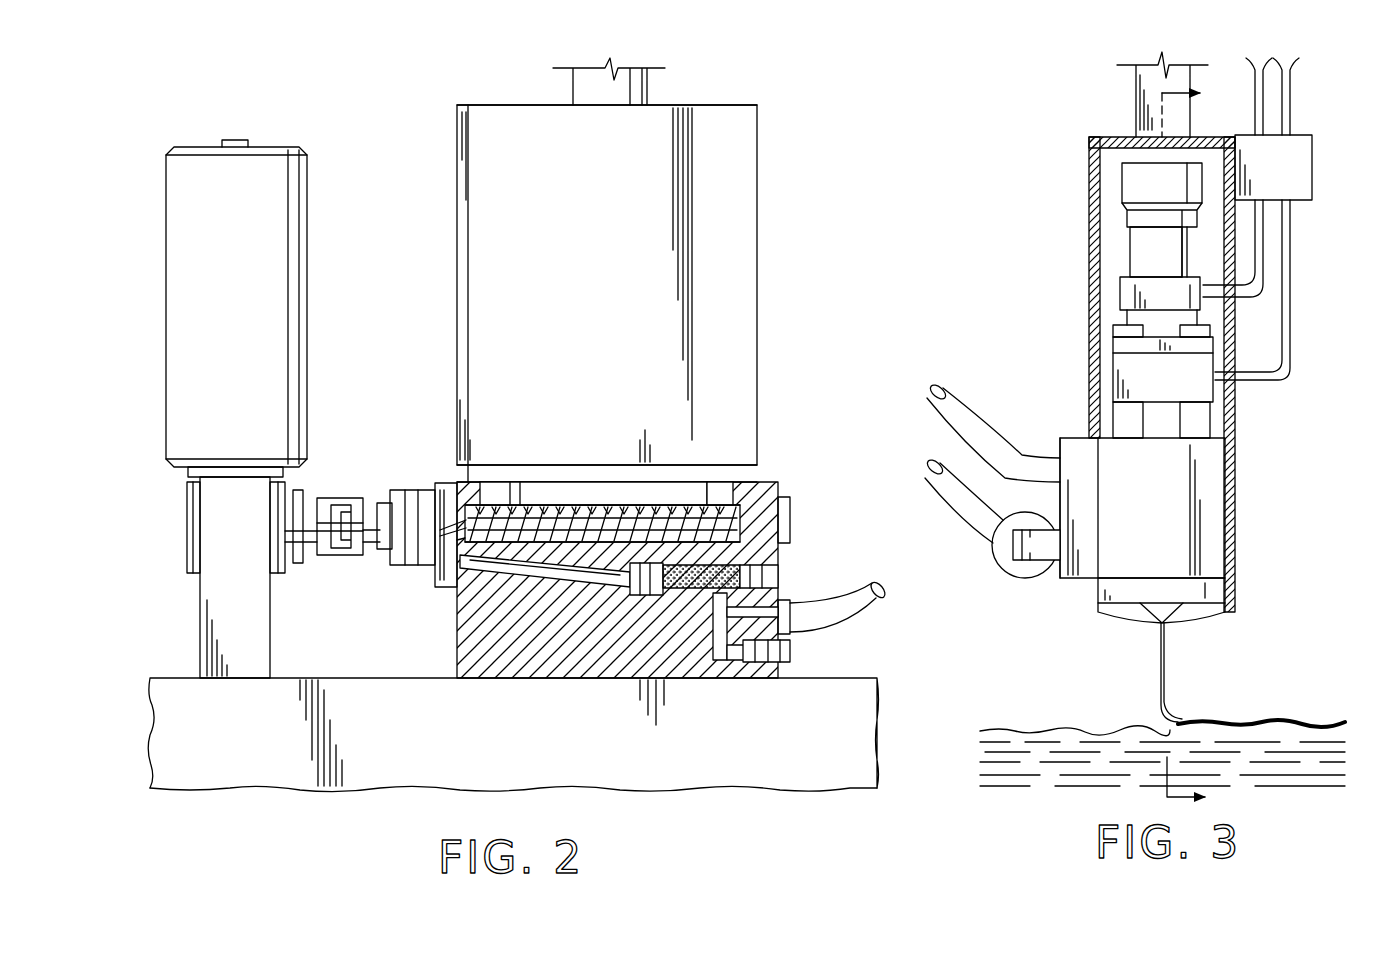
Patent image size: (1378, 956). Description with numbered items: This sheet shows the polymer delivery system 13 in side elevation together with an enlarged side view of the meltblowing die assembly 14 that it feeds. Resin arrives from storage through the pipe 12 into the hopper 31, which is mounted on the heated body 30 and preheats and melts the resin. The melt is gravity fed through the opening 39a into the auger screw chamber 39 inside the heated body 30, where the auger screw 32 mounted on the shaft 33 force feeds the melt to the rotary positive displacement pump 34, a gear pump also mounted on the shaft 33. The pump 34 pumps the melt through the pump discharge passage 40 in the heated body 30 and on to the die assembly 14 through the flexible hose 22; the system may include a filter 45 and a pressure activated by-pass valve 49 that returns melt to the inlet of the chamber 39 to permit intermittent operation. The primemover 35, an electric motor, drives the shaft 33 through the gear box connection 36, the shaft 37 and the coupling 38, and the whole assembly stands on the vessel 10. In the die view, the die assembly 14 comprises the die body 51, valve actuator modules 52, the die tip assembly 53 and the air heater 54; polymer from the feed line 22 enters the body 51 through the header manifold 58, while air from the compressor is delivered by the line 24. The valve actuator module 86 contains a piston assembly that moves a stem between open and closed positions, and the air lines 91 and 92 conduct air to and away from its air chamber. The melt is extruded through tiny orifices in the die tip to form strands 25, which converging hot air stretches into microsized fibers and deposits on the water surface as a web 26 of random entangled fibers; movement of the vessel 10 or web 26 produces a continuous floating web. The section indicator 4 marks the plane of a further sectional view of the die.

In FIG. 2, the vessel 10 is at (396, 746).
In FIG. 2, the pipe 12 is at (633, 88).
In FIG. 2, the polymer delivery system 13 is at (770, 268).
In FIG. 3, the die assembly 14 is at (1084, 148).
In FIG. 2, the flexible line 22 is at (856, 605).
In FIG. 3, the flexible line 22 is at (940, 407).
In FIG. 3, the line 24 is at (940, 483).
In FIG. 3, the strands 25 is at (1156, 668).
In FIG. 3, the web 26 is at (1280, 716).
In FIG. 2, the heated body 30 is at (537, 660).
In FIG. 2, the hopper 31 is at (455, 116).
In FIG. 2, the auger screw 32 is at (612, 520).
In FIG. 2, the shaft 33 is at (374, 505).
In FIG. 2, the rotary positive displacement pump 34 is at (410, 490).
In FIG. 2, the primemover 35 is at (190, 170).
In FIG. 2, the gear box connection 36 is at (232, 590).
In FIG. 2, the shaft 37 is at (308, 530).
In FIG. 2, the coupling 38 is at (356, 548).
In FIG. 2, the auger screw chamber 39 is at (546, 512).
In FIG. 2, the opening 39a is at (668, 494).
In FIG. 2, the pump discharge passage 40 is at (597, 580).
In FIG. 2, the filter 45 is at (742, 580).
In FIG. 2, the pressure activated by-pass valve 49 is at (792, 650).
In FIG. 3, the die body 51 is at (1190, 515).
In FIG. 3, the valve actuator module 52 is at (1130, 248).
In FIG. 3, the die tip assembly 53 is at (1094, 614).
In FIG. 3, the air heater 54 is at (1000, 552).
In FIG. 3, the header manifold 58 is at (1070, 460).
In FIG. 3, the valve actuator module 86 is at (1135, 318).
In FIG. 3, the air line 91 is at (1262, 242).
In FIG. 3, the air line 92 is at (1285, 323).
In FIG. 3, the section line 4 is at (1195, 446).